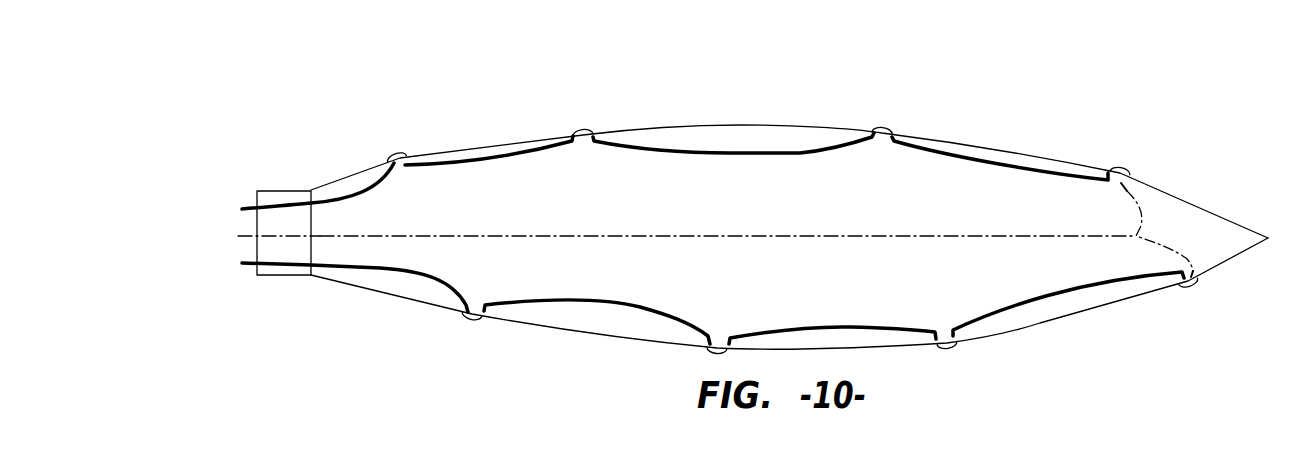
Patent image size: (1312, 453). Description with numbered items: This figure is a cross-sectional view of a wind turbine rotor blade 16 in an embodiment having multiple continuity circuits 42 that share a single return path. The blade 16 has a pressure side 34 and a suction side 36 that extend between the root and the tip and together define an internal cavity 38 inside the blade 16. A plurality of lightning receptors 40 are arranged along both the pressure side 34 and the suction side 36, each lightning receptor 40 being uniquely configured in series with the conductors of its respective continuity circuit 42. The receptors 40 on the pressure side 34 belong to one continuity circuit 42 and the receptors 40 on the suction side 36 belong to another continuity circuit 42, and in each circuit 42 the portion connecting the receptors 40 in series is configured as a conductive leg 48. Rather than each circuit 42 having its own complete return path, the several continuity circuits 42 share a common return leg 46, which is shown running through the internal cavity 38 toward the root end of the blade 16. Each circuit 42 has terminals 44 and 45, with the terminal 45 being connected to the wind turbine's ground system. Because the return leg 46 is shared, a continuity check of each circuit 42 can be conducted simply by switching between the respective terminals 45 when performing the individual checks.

The wind turbine rotor blade 16 is at (762, 216).
The pressure side 34 is at (733, 125).
The suction side 36 is at (605, 340).
The internal cavity 38 is at (504, 168).
The lightning receptor 40 is at (886, 130).
The continuity circuit 42 is at (1002, 175).
The terminal 44 is at (238, 236).
The terminal 45 is at (242, 209).
The common return leg 46 is at (790, 236).
The conductive leg 48 is at (691, 161).